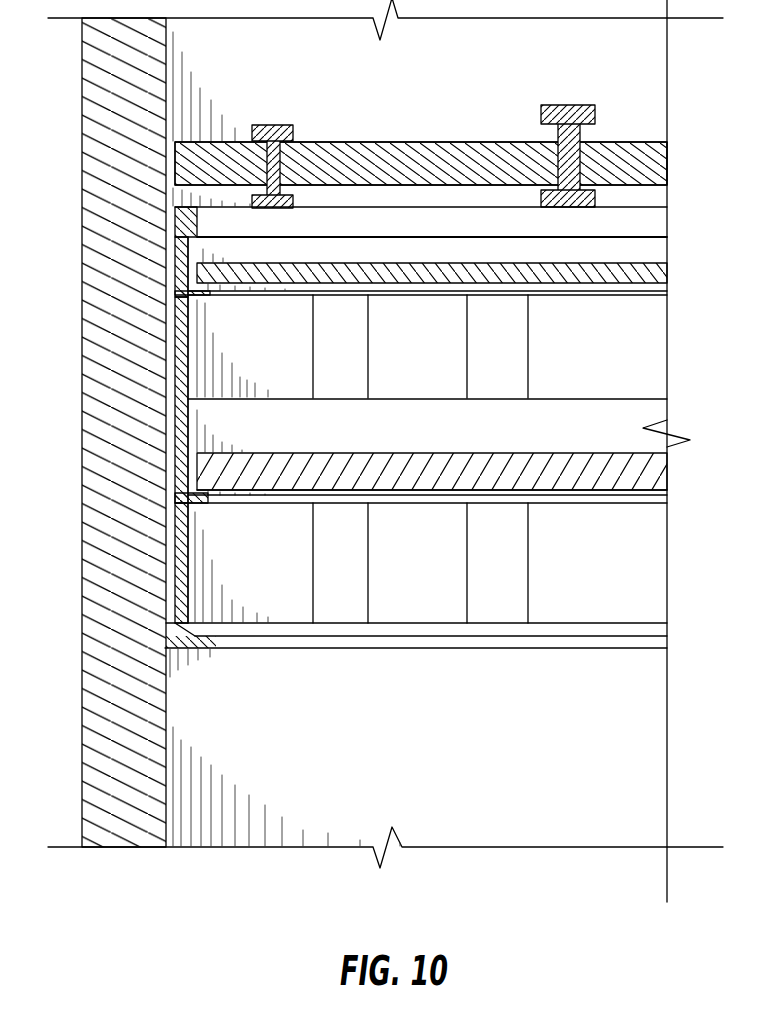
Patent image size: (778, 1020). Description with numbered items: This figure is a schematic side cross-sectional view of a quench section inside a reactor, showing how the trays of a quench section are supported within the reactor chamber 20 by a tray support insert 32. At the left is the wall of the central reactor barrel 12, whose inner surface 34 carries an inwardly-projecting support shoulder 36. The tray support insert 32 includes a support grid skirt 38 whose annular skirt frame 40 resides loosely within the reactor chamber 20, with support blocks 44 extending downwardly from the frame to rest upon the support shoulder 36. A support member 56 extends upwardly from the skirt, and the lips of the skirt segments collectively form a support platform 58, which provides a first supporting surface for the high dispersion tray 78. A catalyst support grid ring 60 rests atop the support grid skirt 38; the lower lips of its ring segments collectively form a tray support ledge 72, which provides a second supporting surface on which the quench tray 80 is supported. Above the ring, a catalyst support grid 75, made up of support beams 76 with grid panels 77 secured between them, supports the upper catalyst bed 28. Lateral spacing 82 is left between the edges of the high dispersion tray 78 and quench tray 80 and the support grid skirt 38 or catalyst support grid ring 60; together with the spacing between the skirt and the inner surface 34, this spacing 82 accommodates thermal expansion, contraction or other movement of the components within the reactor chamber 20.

The central reactor barrel 12 is at (90, 132).
The reactor chamber 20 is at (459, 752).
The upper catalyst bed 28 is at (417, 76).
The tray support insert 32 is at (158, 367).
The inner surface 34 is at (167, 758).
The support shoulder 36 is at (277, 620).
The support grid skirt 38 is at (158, 518).
The annular skirt frame 40 is at (388, 397).
The support blocks 44 is at (343, 573).
The support member 56 is at (333, 363).
The support platform 58 is at (253, 489).
The catalyst support grid ring 60 is at (158, 237).
The tray support ledge 72 is at (602, 284).
The catalyst support grid 75 is at (440, 135).
The support beams 76 is at (287, 178).
The grid panels 77 is at (215, 155).
The high dispersion tray 78 is at (410, 464).
The quench tray 80 is at (428, 266).
The lateral spacing 82 is at (192, 268).